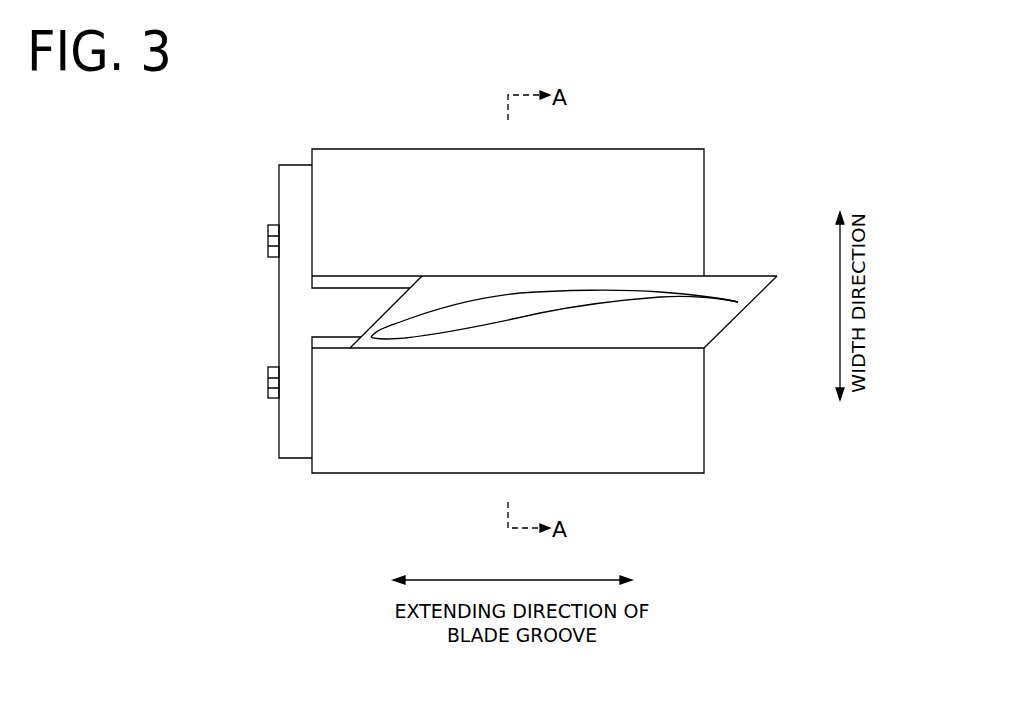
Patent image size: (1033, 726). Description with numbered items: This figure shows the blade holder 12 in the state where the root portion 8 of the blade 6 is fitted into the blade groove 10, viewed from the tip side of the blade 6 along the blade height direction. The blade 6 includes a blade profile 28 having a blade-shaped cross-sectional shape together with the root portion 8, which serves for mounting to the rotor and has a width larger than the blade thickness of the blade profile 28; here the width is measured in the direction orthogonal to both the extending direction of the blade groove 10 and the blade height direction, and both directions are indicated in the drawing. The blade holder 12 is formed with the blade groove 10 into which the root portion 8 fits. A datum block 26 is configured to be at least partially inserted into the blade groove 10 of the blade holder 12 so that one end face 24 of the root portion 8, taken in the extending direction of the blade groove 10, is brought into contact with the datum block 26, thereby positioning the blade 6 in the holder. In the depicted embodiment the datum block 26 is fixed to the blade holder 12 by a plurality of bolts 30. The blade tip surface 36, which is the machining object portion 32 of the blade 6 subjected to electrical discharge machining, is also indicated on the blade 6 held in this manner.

The blade 6 is at (757, 276).
The root portion 8 is at (733, 320).
The blade groove 10 is at (640, 348).
The blade holder 12 is at (662, 149).
The end face 24 is at (393, 305).
The datum block 26 is at (279, 188).
The blade profile 28 is at (643, 293).
The bolts 30 is at (268, 240).
The machining object portion 32 is at (452, 316).
The blade tip surface 36 is at (554, 317).